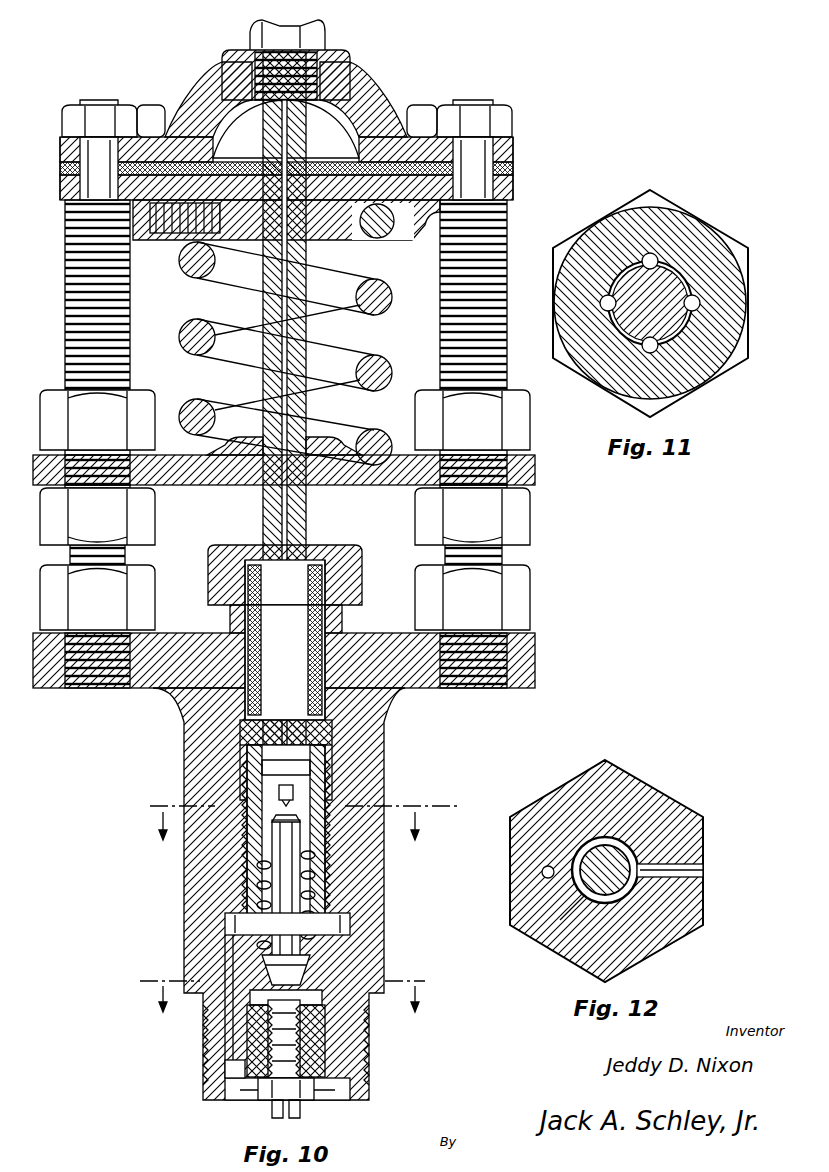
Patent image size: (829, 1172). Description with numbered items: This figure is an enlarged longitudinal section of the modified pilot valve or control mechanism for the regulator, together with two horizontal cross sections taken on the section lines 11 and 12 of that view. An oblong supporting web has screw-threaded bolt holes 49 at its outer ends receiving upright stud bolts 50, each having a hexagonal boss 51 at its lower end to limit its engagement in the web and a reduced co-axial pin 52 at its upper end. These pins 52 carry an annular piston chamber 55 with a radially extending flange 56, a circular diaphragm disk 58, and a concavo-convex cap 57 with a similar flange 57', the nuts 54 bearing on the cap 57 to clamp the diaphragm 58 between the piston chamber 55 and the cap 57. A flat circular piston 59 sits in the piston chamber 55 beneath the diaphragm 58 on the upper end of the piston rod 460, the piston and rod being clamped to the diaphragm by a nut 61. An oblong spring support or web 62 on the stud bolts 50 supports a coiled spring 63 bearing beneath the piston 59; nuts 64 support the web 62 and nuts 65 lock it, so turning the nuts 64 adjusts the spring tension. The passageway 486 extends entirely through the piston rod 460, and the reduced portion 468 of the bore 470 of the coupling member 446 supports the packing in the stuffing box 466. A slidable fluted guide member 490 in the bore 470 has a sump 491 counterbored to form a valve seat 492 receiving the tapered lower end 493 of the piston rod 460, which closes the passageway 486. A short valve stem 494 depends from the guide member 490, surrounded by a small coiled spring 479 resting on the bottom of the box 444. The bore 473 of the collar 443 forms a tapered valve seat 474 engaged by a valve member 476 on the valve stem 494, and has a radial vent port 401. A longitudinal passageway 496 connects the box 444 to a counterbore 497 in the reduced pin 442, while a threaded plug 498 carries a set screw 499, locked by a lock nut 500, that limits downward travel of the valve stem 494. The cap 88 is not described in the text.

In FIG. 10, the cap 88 is at (248, 36).
In FIG. 10, the reduced upstanding co-axial pin 52 is at (100, 102).
In FIG. 10, the nut 54 is at (135, 122).
In FIG. 10, the concavo-convex crown or cap 57 is at (288, 98).
In FIG. 10, the nut 61 is at (330, 156).
In FIG. 10, the flange of cap 57' is at (310, 160).
In FIG. 10, the circular diaphragm disk 58 is at (514, 168).
In FIG. 10, the external radially extending flange 56 is at (514, 190).
In FIG. 10, the annular piston chamber 55 is at (395, 228).
In FIG. 10, the flat circular piston 59 is at (178, 240).
In FIG. 10, the upright stud pin or bolt 50 is at (131, 312).
In FIG. 10, the coiled spring 63 is at (378, 312).
In FIG. 10, the nut 65 is at (285, 420).
In FIG. 10, the oblong spring support or web 62 is at (203, 478).
In FIG. 10, the nut 64 is at (285, 516).
In FIG. 10, the passageway of piston rod 486 is at (262, 518).
In FIG. 10, the piston rod 460 is at (307, 520).
In FIG. 10, the stuffing box 466 is at (362, 575).
In FIG. 10, the hexagonal boss 51 is at (285, 597).
In FIG. 10, the screw-threaded bolt hole 49 is at (60, 689).
In FIG. 10, the reduced portion of bore 468 is at (200, 735).
In FIG. 10, the bore of coupling member 470 is at (384, 745).
In FIG. 11, the bore of coupling member 470 is at (690, 285).
In FIG. 10, the coupling member 446 is at (384, 760).
In FIG. 11, the coupling member 446 is at (695, 238).
In FIG. 10, the tapered lower end of piston rod 493 is at (330, 790).
In FIG. 10, the valve seat 492 is at (240, 780).
In FIG. 10, the sump or recess 491 is at (240, 800).
In FIG. 10, the slidable fluted guide member 490 is at (300, 795).
In FIG. 11, the slidable fluted guide member 490 is at (640, 332).
In FIG. 10, the section line 11- 11 is at (308, 816).
In FIG. 10, the small coiled spring 479 is at (270, 870).
In FIG. 10, the short valve stem 494 is at (258, 892).
In FIG. 10, the collar 443 is at (332, 900).
In FIG. 11, the collar 443 is at (740, 362).
In FIG. 12, the collar 443 is at (650, 803).
In FIG. 10, the box 444 is at (352, 926).
In FIG. 10, the valve member 476 is at (235, 955).
In FIG. 12, the valve member 476 is at (558, 922).
In FIG. 10, the tapered shoulder or valve seat 474 is at (310, 975).
In FIG. 10, the section line 12- 12 is at (279, 990).
In FIG. 10, the vent port or passageway 401 is at (322, 1000).
In FIG. 12, the vent port or passageway 401 is at (706, 870).
In FIG. 10, the bore of collar 473 is at (325, 1030).
In FIG. 12, the bore of collar 473 is at (588, 836).
In FIG. 10, the longitudinal passageway 496 is at (225, 1030).
In FIG. 12, the longitudinal passageway 496 is at (540, 876).
In FIG. 10, the reduced pin of collar 442 is at (302, 1060).
In FIG. 10, the externally screw-threaded plug 498 is at (240, 1078).
In FIG. 10, the counterbore 497 is at (316, 1092).
In FIG. 10, the lock nut 500 is at (270, 1104).
In FIG. 10, the stop or set screw 499 is at (302, 1112).